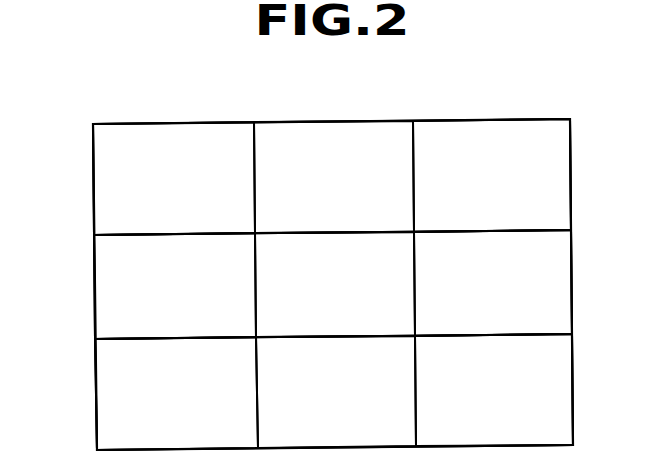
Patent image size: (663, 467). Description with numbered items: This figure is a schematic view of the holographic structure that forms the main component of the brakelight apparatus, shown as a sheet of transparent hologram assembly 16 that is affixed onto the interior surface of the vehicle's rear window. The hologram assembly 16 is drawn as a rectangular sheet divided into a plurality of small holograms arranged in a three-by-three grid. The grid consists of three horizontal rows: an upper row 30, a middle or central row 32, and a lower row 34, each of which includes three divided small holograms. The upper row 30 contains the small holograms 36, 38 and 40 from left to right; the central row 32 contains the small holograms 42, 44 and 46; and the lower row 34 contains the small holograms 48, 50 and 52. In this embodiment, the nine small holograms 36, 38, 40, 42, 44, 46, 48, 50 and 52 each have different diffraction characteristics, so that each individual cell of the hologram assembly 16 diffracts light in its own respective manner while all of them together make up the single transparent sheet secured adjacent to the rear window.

The hologram assembly 16 is at (553, 118).
The upper row 30 is at (93, 187).
The central row 32 is at (95, 293).
The lower row 34 is at (96, 393).
The small hologram 36 is at (150, 198).
The small hologram 38 is at (310, 198).
The small hologram 40 is at (467, 198).
The small hologram 42 is at (193, 306).
The small hologram 44 is at (311, 305).
The small hologram 46 is at (467, 305).
The small hologram 48 is at (197, 408).
The small hologram 50 is at (311, 407).
The small hologram 52 is at (468, 405).